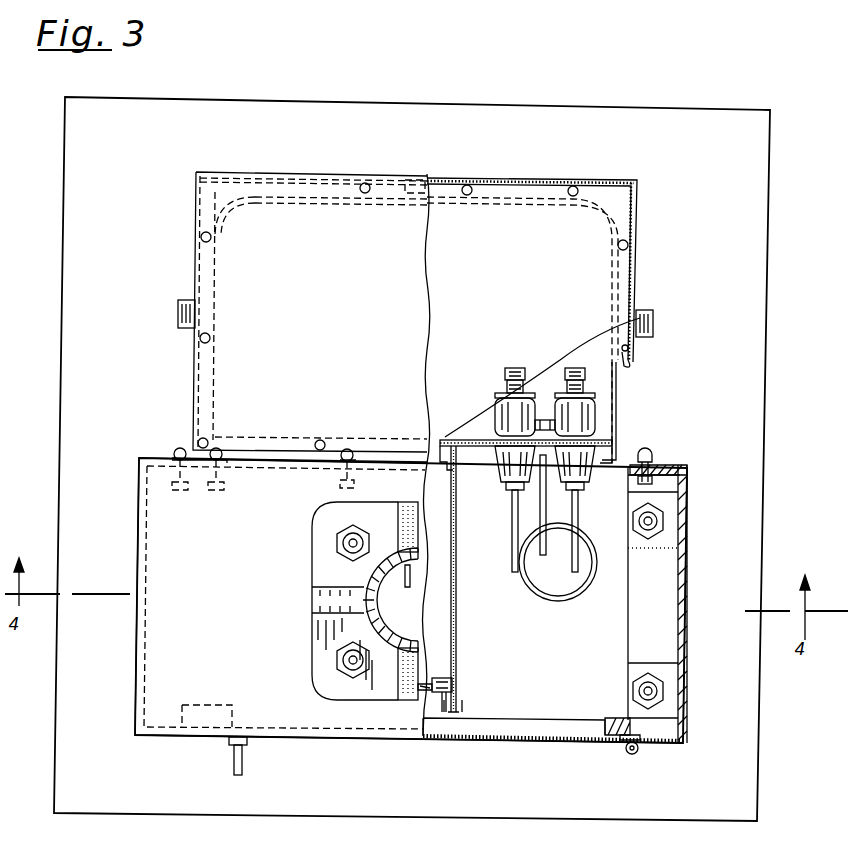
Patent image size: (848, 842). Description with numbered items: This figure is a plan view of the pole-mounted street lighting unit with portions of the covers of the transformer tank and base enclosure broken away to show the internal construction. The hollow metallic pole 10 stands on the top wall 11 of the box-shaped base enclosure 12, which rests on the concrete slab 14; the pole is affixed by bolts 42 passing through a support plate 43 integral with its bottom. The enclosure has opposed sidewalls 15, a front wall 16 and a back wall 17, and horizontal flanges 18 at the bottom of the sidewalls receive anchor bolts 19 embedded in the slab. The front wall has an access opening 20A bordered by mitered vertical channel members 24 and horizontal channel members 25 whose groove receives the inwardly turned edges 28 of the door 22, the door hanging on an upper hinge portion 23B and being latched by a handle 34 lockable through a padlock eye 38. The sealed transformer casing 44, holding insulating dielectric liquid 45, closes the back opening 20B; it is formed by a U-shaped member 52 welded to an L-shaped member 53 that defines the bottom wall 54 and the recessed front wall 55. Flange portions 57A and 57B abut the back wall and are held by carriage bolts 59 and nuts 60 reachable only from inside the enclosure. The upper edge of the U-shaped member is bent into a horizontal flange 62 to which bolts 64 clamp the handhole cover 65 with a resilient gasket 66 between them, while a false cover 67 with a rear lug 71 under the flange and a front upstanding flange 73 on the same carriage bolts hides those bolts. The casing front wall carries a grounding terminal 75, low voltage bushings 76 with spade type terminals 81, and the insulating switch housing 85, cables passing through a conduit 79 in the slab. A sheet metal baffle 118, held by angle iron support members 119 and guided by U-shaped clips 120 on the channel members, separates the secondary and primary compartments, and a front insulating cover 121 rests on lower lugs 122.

The hollow metallic pole 10 is at (392, 642).
The top wall 11 is at (208, 600).
The base enclosure 12 is at (118, 652).
The concrete slab 14 is at (60, 432).
The sidewalls 15 is at (135, 568).
The front wall 16 is at (155, 740).
The back wall 17 is at (158, 460).
The horizontal flanges 18 is at (642, 612).
The anchor bolts 19 is at (648, 530).
The front access opening 20A is at (232, 714).
The back access opening 20B is at (626, 470).
The door 22 is at (460, 742).
The upper hinge portion 23B is at (633, 755).
The vertical channel members 24 is at (185, 705).
The horizontal channel members 25 is at (345, 736).
The inwardly turned edges 28 is at (625, 738).
The handle 34 is at (244, 770).
The padlock eye 38 is at (233, 755).
The bolts 42 is at (340, 658).
The support plate 43 is at (330, 555).
The transformer casing 44 is at (196, 200).
The insulating dielectric liquid 45 is at (586, 344).
The U-shaped member 52 is at (297, 197).
The L-shaped member 53 is at (442, 420).
The bottom wall 54 is at (508, 358).
The front wall 55 is at (286, 437).
The upper vertically extending flange portion 57A is at (180, 448).
The horizontally extending flange portions 57B is at (655, 465).
The carriage bolts 59 is at (186, 465).
The nuts 60 is at (140, 492).
The horizontal flange 62 is at (598, 205).
The bolts 64 is at (201, 238).
The handhole cover 65 is at (668, 215).
The resilient gasket 66 is at (630, 318).
The false cover 67 is at (322, 300).
The lug 71 is at (415, 180).
The upstanding flange 73 is at (240, 456).
The grounding terminal 75 is at (543, 560).
The low voltage bushings 76 is at (512, 474).
The conduit 79 is at (568, 601).
The spade type terminals 81 is at (511, 525).
The insulating switch housing 85 is at (418, 575).
The sheet metal baffle 118 is at (456, 570).
The angle iron support members 119 is at (442, 470).
The U-shaped clips 120 is at (460, 710).
The front insulating cover 121 is at (418, 688).
The lower lugs 122 is at (447, 665).